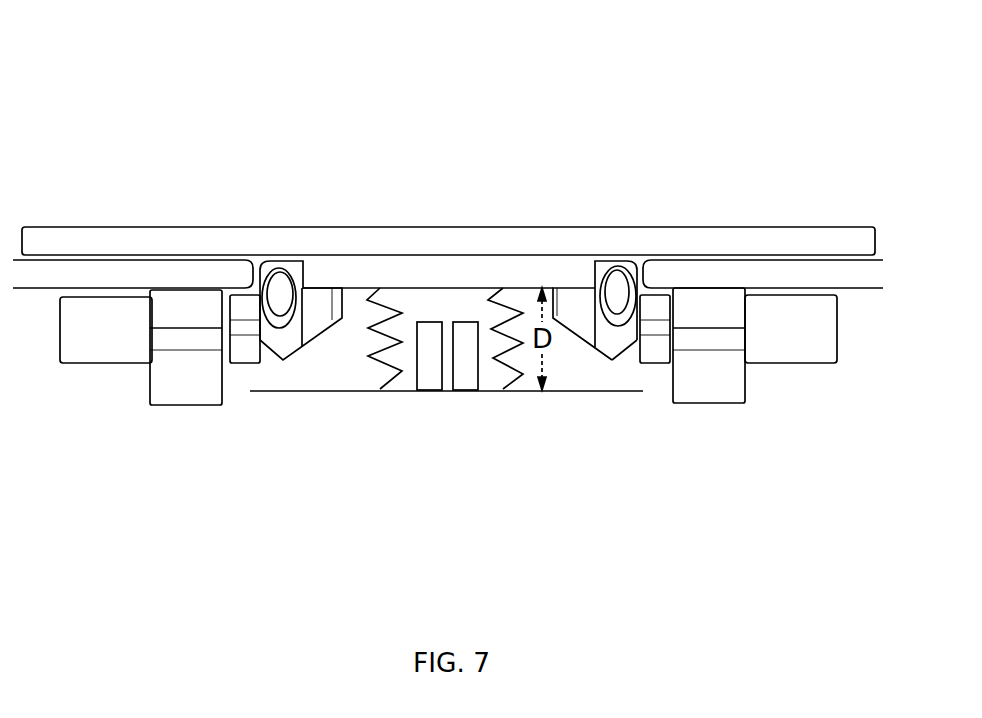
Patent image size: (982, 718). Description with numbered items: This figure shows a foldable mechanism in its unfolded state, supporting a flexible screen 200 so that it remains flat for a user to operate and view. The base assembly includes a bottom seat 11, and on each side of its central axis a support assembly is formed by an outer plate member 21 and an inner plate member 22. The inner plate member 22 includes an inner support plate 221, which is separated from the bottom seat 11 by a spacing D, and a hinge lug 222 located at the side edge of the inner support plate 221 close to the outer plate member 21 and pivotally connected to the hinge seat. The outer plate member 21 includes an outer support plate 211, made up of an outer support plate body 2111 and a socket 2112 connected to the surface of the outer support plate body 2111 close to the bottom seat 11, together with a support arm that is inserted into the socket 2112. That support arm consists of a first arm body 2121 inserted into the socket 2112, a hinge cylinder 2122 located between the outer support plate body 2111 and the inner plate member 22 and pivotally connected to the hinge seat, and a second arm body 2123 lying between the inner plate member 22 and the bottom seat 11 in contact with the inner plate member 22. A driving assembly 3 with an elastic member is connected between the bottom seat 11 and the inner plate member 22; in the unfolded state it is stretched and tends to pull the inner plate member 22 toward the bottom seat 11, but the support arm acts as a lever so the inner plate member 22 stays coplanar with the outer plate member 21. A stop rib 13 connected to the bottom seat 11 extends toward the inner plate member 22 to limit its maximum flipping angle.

The flexible screen 200 is at (817, 243).
The outer plate member 21 is at (205, 88).
The outer support plate 211 is at (223, 142).
The outer support plate body 2111 is at (158, 280).
The socket 2112 is at (205, 307).
The stop rib 13 is at (422, 333).
The bottom seat 11 is at (272, 393).
The driving assembly 3 is at (495, 502).
The inner plate member 22 is at (603, 143).
The inner support plate 221 is at (545, 273).
The hinge lug 222 is at (603, 273).
The second arm body 2123 is at (580, 317).
The hinge cylinder 2122 is at (612, 333).
The first arm body 2121 is at (773, 331).